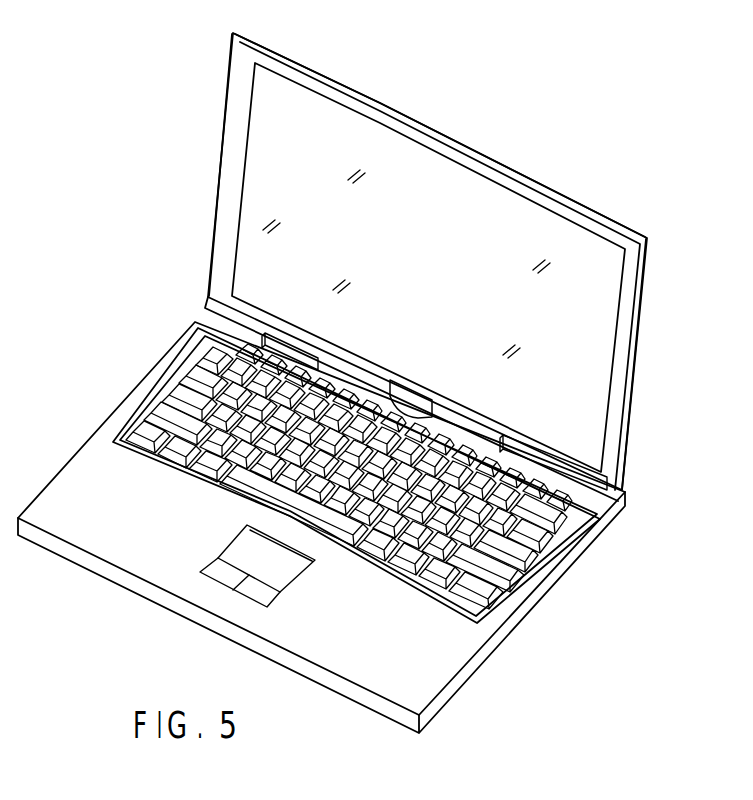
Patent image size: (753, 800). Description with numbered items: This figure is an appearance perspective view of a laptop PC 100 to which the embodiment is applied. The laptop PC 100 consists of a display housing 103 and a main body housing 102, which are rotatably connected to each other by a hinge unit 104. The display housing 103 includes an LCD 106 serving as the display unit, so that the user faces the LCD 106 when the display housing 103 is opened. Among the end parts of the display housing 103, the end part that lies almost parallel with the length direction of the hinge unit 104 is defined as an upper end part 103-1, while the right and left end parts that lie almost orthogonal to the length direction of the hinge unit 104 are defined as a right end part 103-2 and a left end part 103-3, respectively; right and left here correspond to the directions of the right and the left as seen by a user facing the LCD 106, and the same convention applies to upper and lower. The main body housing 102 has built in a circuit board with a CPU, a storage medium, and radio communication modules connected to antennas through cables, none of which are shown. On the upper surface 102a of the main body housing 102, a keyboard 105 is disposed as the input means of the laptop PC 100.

The laptop PC 100 is at (171, 154).
The main body housing 102 is at (110, 398).
The upper surface 102a is at (100, 461).
The display housing 103 is at (593, 207).
The upper end part 103-1 is at (302, 80).
The right end part 103-2 is at (619, 365).
The left end part 103-3 is at (230, 192).
The hinge unit 104 is at (430, 385).
The keyboard 105 is at (516, 557).
The LCD 106 is at (496, 198).